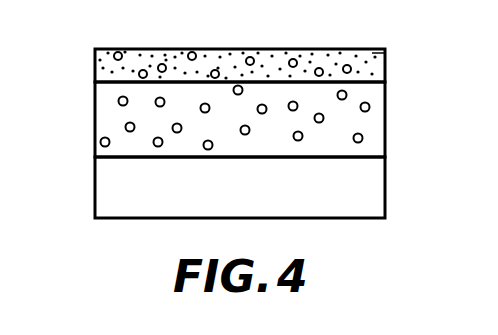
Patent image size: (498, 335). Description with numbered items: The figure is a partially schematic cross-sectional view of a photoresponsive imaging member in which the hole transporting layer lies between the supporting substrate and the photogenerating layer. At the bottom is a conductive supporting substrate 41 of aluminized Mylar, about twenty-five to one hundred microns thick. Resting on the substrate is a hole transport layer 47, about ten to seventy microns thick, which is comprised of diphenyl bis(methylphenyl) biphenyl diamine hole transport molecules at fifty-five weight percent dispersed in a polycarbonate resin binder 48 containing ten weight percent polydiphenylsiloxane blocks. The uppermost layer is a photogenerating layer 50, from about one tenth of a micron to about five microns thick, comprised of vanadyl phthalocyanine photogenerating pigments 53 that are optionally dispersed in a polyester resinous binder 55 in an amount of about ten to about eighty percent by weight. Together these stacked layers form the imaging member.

The conductive supporting substrate 41 is at (388, 190).
The hole transport layer 47 is at (388, 108).
The polycarbonate resin binder 48 is at (117, 103).
The photogenerating layer 50 is at (388, 62).
The vanadyl phthalocyanine photogenerating pigments 53 is at (387, 52).
The polyester resinous binder 55 is at (112, 58).